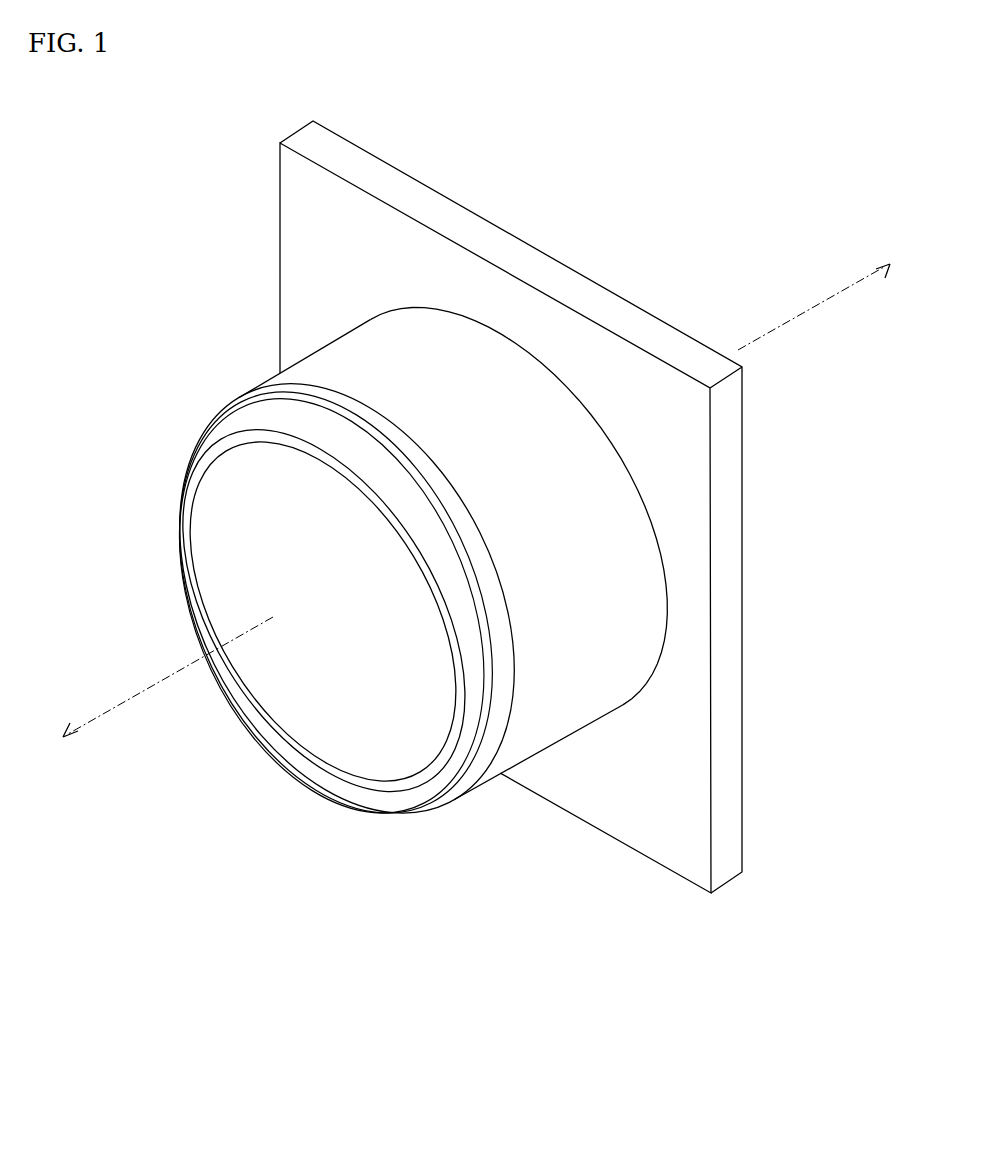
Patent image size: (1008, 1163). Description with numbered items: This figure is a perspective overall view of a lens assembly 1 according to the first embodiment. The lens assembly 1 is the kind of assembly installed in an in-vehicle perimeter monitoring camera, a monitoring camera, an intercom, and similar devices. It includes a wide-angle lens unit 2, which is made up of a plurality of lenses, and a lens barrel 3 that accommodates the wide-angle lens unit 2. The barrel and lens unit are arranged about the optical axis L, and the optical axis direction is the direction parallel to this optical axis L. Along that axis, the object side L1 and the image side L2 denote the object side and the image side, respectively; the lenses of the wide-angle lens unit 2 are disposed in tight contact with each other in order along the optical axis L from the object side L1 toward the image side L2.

The lens assembly 1 is at (168, 143).
The wide-angle lens unit 2 is at (330, 678).
The lens barrel 3 is at (547, 690).
The optical axis L is at (95, 722).
The object side L1 is at (160, 677).
The image side L2 is at (818, 286).